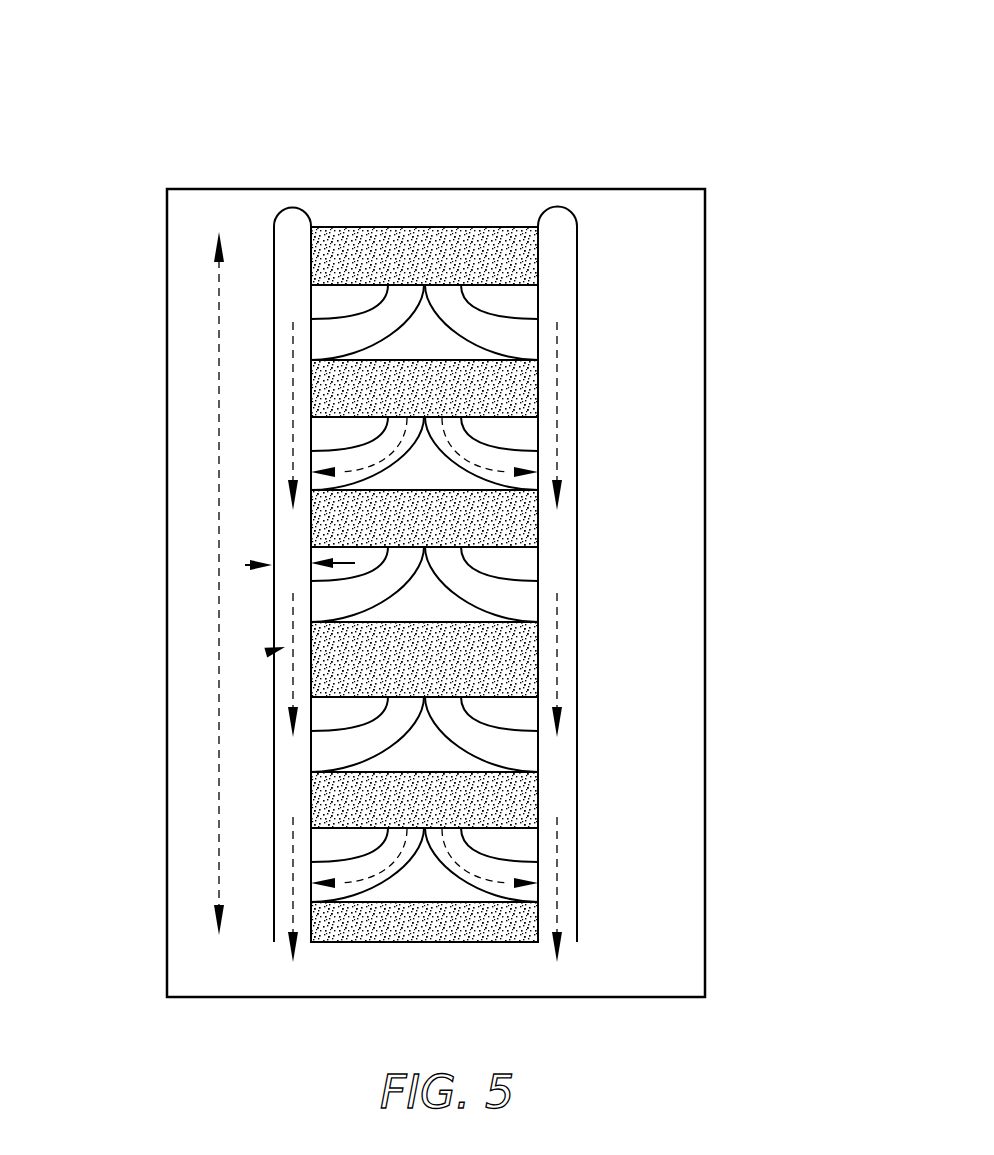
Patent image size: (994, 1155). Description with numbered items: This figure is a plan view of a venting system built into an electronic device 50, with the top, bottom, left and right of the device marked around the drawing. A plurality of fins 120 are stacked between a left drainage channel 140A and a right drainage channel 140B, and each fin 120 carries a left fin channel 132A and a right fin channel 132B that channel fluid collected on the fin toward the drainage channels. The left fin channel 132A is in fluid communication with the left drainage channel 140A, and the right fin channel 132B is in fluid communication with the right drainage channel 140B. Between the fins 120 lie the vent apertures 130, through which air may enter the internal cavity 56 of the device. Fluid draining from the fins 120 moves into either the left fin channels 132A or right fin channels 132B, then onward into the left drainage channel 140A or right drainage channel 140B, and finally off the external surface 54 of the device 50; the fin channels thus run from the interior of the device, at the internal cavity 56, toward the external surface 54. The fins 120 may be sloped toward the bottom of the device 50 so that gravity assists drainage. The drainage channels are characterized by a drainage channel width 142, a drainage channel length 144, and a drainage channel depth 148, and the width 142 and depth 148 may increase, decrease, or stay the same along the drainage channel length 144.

The electronic device 50 is at (490, 98).
The external surface 54 is at (665, 675).
The internal cavity 56 is at (437, 240).
The fins 120 is at (522, 301).
The vent apertures 130 is at (508, 395).
The left fin channel 132A is at (330, 338).
The right fin channel 132B is at (517, 338).
The left drainage channel 140A is at (273, 227).
The right drainage channel 140B is at (577, 283).
The drainage channel width 142 is at (245, 565).
The drainage channel length 144 is at (220, 368).
The drainage channel depth 148 is at (272, 648).